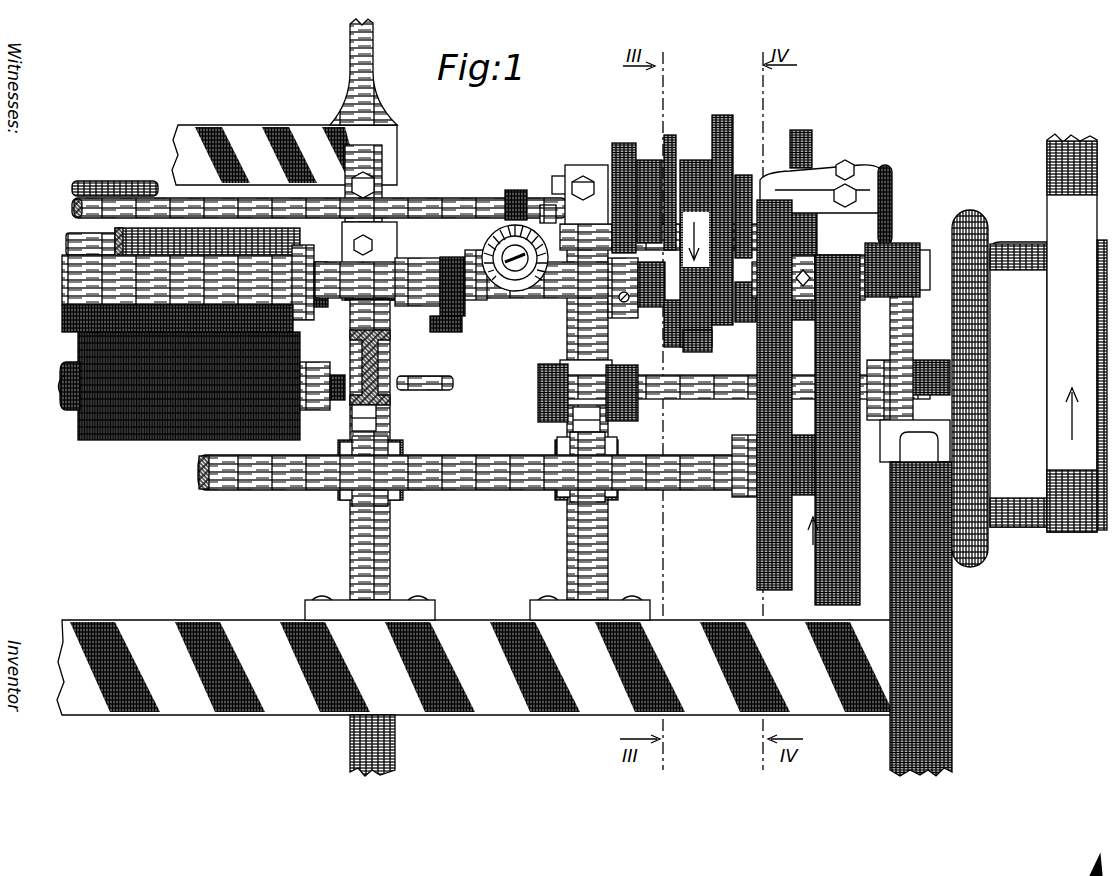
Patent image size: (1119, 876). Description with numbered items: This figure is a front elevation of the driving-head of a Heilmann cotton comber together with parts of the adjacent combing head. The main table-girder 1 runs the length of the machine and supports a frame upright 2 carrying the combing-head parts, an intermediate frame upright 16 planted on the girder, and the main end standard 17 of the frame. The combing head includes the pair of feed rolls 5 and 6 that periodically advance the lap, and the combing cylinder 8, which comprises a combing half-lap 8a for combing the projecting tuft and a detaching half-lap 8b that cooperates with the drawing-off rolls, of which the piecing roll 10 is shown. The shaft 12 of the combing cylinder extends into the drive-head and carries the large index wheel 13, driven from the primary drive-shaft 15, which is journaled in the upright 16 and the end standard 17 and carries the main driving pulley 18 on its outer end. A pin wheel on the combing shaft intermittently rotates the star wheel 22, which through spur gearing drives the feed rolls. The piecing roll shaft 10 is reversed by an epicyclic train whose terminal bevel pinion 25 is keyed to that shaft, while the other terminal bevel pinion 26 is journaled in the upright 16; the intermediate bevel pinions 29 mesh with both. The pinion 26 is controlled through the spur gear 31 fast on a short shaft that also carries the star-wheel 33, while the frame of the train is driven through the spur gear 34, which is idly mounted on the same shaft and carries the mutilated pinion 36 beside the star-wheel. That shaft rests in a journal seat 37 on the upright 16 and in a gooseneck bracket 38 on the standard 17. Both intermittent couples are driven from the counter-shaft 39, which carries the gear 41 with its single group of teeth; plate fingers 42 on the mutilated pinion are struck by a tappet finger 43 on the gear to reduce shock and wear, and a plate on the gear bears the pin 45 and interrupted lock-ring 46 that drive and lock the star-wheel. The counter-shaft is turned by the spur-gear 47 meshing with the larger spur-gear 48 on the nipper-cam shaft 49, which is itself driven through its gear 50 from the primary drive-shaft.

The main table-girder 1 is at (452, 620).
The frame upright 2 is at (388, 557).
The feed roll 5 is at (82, 182).
The feed roll 6 is at (70, 213).
The combing cylinder 8 is at (62, 281).
The combing half-lap 8a is at (67, 330).
The detaching half-lap 8b is at (65, 243).
The drawing-off roll 10 is at (143, 250).
The combing cylinder shaft 12 is at (517, 293).
The index wheel 13 is at (807, 132).
The primary drive-shaft 15 is at (532, 398).
The intermediate frame upright 16 is at (608, 552).
The main end standard 17 is at (904, 339).
The main driving pulley 18 is at (1018, 384).
The star wheel 22 is at (745, 322).
The bevel pinion 25 is at (483, 222).
The bevel pinion 26 is at (547, 205).
The intermediate bevel pinion 29 is at (506, 193).
The spur gear 31 is at (622, 144).
The star-wheel 33 is at (723, 113).
The spur gear 34 is at (645, 159).
The mutilated pinion 36 is at (699, 158).
The journal seat 37 is at (594, 172).
The gooseneck bracket 38 is at (820, 163).
The counter-shaft 39 is at (742, 280).
The driving gear 41 is at (660, 312).
The plate fingers 42 is at (669, 133).
The tappet finger 43 is at (668, 337).
The pin 45 is at (720, 208).
The lock-ring 46 is at (715, 340).
The spur-gear 47 is at (790, 245).
The spur-gear 48 is at (757, 574).
The nipper-cam shaft 49 is at (227, 481).
The gear 50 is at (822, 587).